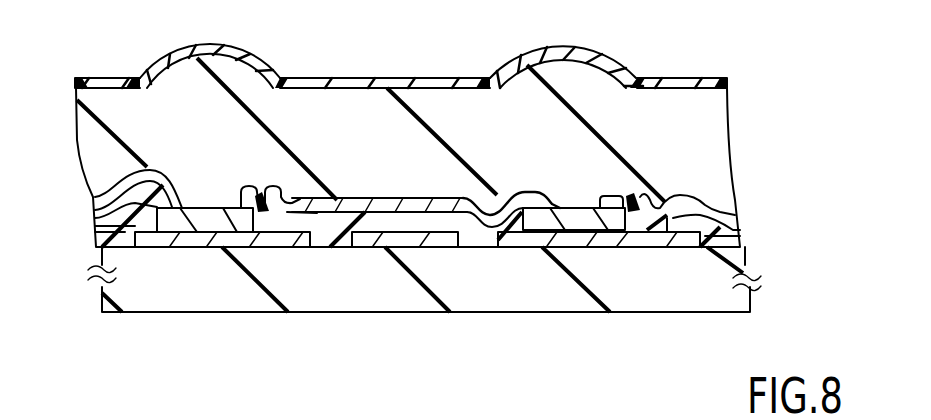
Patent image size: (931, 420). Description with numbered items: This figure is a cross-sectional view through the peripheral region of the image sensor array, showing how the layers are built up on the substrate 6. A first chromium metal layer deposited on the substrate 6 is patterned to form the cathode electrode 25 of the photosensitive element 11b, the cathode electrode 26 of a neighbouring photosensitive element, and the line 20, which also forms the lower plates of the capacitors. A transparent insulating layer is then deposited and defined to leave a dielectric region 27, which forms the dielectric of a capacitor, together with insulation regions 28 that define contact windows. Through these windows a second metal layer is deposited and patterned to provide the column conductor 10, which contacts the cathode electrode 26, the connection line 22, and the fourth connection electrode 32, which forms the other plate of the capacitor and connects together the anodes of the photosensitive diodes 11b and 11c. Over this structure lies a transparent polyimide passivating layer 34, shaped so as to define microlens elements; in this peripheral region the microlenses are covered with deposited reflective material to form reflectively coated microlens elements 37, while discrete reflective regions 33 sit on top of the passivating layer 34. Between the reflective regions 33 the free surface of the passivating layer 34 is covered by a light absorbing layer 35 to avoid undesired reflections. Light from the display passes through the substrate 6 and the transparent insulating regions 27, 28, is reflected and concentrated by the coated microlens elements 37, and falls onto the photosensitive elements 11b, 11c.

The substrate 6 is at (600, 290).
The column conductor 10 is at (713, 212).
The photosensitive element 11b is at (563, 208).
The photosensitive element 11c is at (210, 222).
The line 20 is at (393, 243).
The connection line 22 is at (93, 202).
The cathode electrode 25 is at (180, 238).
The cathode electrode 26 is at (542, 243).
The dielectric region 27 is at (375, 213).
The insulation region 28 is at (93, 224).
The fourth connection electrode 32 is at (458, 205).
The reflective region 33 is at (242, 46).
The passivating layer 34 is at (705, 116).
The light absorbing layer 35 is at (108, 78).
The reflectively coated microlens element 37 is at (243, 85).